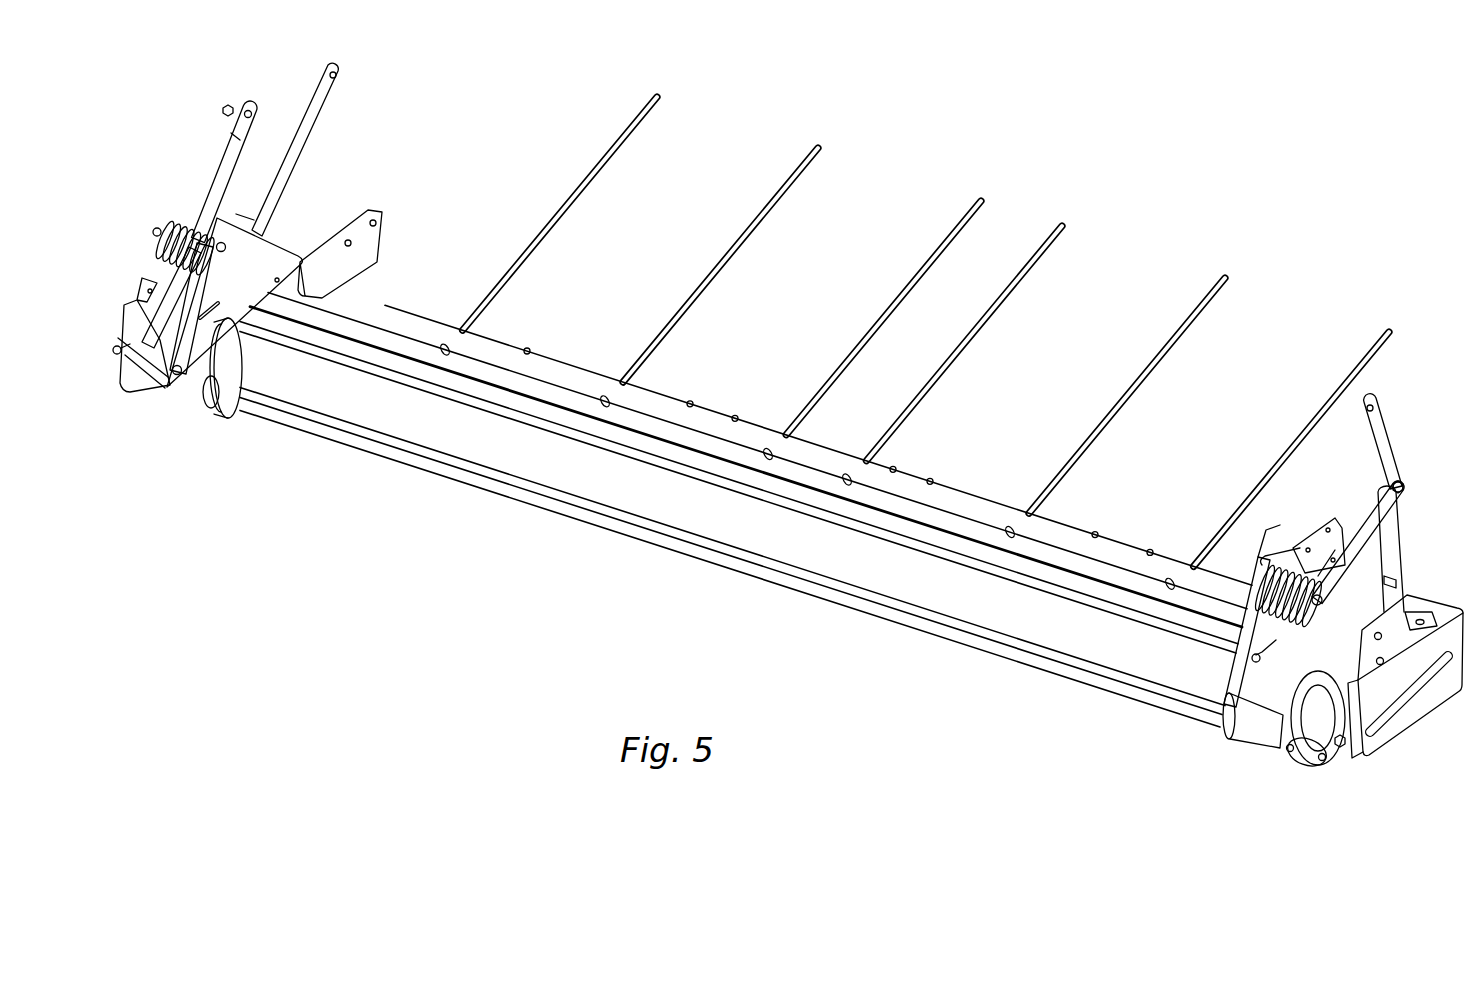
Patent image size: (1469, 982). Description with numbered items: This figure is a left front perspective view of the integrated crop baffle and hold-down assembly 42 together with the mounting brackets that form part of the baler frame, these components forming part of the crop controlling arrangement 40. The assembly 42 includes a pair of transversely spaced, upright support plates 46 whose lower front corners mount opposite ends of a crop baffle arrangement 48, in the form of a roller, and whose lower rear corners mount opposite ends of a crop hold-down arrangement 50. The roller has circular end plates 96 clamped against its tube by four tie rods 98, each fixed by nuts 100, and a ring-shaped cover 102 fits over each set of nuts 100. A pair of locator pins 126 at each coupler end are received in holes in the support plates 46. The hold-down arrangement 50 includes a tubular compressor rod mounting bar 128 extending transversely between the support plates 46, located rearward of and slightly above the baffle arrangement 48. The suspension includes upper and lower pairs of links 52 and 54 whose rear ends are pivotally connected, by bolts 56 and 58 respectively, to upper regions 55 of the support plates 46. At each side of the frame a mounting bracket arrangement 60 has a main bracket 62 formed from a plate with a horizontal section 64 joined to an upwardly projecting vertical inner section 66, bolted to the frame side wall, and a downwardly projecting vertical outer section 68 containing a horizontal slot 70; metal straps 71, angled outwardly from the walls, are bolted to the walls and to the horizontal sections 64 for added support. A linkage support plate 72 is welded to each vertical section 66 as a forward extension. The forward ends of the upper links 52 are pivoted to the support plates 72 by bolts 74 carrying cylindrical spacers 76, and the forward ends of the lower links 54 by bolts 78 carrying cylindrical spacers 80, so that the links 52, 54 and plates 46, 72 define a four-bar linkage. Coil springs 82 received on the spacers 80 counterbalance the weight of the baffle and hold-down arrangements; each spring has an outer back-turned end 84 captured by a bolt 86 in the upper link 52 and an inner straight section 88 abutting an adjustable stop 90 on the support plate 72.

The crop controlling arrangement 40 is at (585, 612).
The integrated crop baffle and crop hold-down assembly 42 is at (1028, 440).
The upright support plates 46 is at (245, 207).
The crop baffle arrangement 48 is at (563, 520).
The crop hold-down arrangement 50 is at (938, 470).
The upper pair of links 52 is at (223, 153).
The lower pair of links 54 is at (172, 282).
The upper regions of the support plates 55 is at (218, 140).
The bolts 56 is at (228, 102).
The bolts 58 is at (222, 188).
The mounting bracket arrangement 60 is at (333, 208).
The main bracket 62 is at (392, 247).
The horizontal section 64 is at (1438, 606).
The vertical inner section 66 is at (375, 228).
The vertical outer section 68 is at (1426, 703).
The horizontal slot 70 is at (1373, 738).
The metal straps 71 is at (334, 106).
The linkage support plate 72 is at (282, 223).
The bolts 74 is at (1316, 536).
The cylindrical spacer 76 is at (1262, 565).
The bolts 78 is at (1293, 743).
The cylindrical spacer 80 is at (1252, 725).
The coil springs 82 is at (1262, 578).
The back-turned ends 84 is at (1318, 520).
The bolts 86 is at (1322, 542).
The straight sections 88 is at (1225, 623).
The stops 90 is at (1240, 688).
The end plates 96 is at (230, 412).
The tie rods 98 is at (597, 445).
The nuts 100 is at (1290, 762).
The cover 102 is at (208, 414).
The locator pins 126 is at (1340, 760).
The tubular compressor rod mounting bar 128 is at (832, 443).